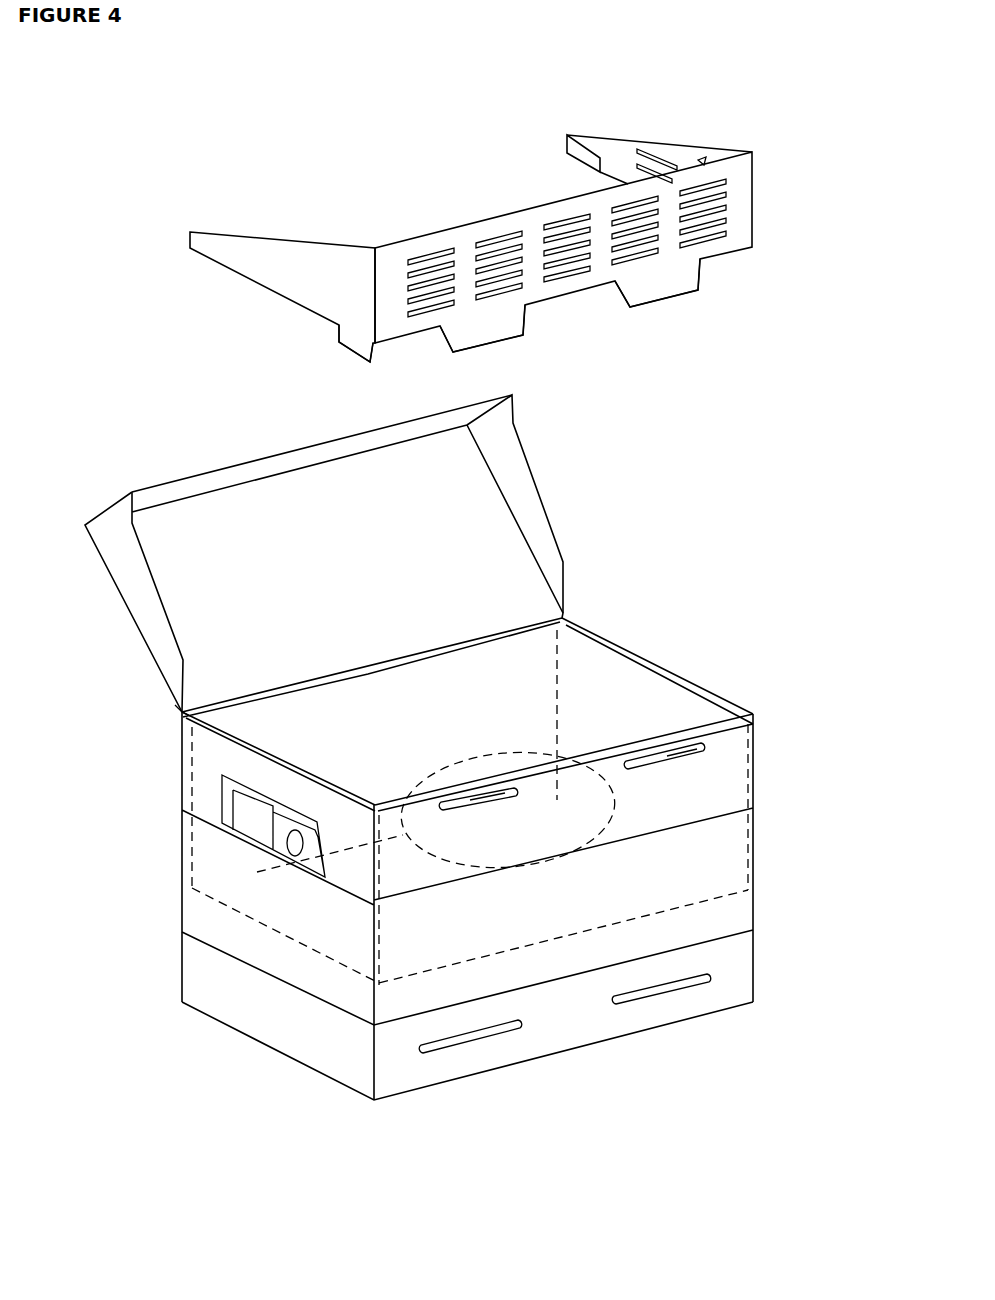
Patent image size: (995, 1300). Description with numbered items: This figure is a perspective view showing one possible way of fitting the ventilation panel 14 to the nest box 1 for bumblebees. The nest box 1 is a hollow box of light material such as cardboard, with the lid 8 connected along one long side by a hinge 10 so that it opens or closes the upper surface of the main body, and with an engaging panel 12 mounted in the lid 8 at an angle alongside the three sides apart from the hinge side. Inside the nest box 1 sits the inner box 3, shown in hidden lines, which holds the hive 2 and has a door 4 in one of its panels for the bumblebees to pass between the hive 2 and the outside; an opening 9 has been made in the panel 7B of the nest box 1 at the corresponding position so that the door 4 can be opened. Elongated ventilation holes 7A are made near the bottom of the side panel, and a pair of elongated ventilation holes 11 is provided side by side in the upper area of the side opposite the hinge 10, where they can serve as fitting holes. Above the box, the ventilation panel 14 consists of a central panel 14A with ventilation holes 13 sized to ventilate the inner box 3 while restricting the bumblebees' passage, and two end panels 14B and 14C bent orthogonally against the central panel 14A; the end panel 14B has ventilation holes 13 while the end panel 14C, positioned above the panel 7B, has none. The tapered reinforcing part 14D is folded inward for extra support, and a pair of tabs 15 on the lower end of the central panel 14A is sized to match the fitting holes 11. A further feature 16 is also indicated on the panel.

The nest box 1 is at (705, 657).
The hive 2 is at (620, 830).
The inner box 3 is at (595, 667).
The door 4 is at (293, 843).
The elongated ventilation holes 7A is at (627, 1003).
The panel 7B is at (270, 950).
The lid 8 is at (448, 575).
The opening 9 is at (215, 815).
The hinge 10 is at (177, 706).
The elongated ventilation holes 11 is at (505, 800).
The engaging panel 12 is at (210, 483).
The ventilation holes 13 is at (697, 237).
The ventilation panel 14 is at (432, 183).
The central panel 14A is at (742, 212).
The end panel 14B is at (615, 155).
The end panel 14C is at (267, 257).
The reinforcing part 14D is at (578, 150).
The tabs 15 is at (497, 342).
The notch 16 is at (355, 338).